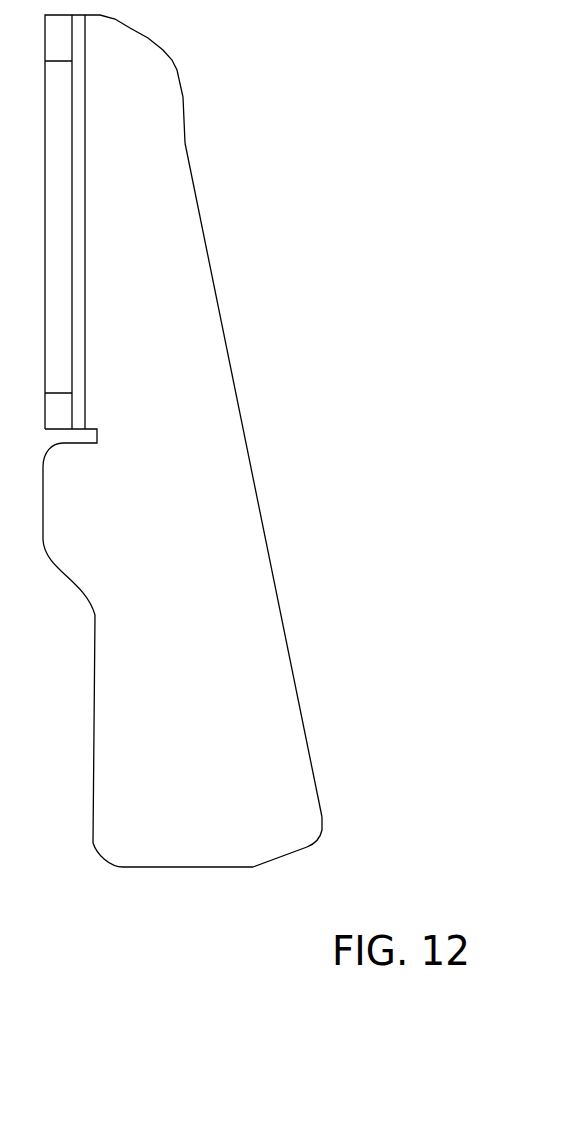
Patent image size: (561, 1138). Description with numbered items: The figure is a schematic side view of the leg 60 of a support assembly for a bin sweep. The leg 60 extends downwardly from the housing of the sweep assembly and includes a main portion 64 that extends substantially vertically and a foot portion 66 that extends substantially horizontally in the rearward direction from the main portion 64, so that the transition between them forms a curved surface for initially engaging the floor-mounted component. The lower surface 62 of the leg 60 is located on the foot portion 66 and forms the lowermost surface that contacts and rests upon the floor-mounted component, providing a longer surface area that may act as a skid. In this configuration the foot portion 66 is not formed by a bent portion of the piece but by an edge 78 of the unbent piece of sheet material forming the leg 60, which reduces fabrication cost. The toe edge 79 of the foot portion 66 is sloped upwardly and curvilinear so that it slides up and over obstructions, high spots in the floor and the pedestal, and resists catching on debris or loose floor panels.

The leg 60 is at (173, 238).
The lower surface 62 is at (142, 872).
The main portion 64 is at (213, 452).
The foot portion 66 is at (268, 815).
The edge 78 is at (207, 872).
The toe edge 79 is at (292, 857).